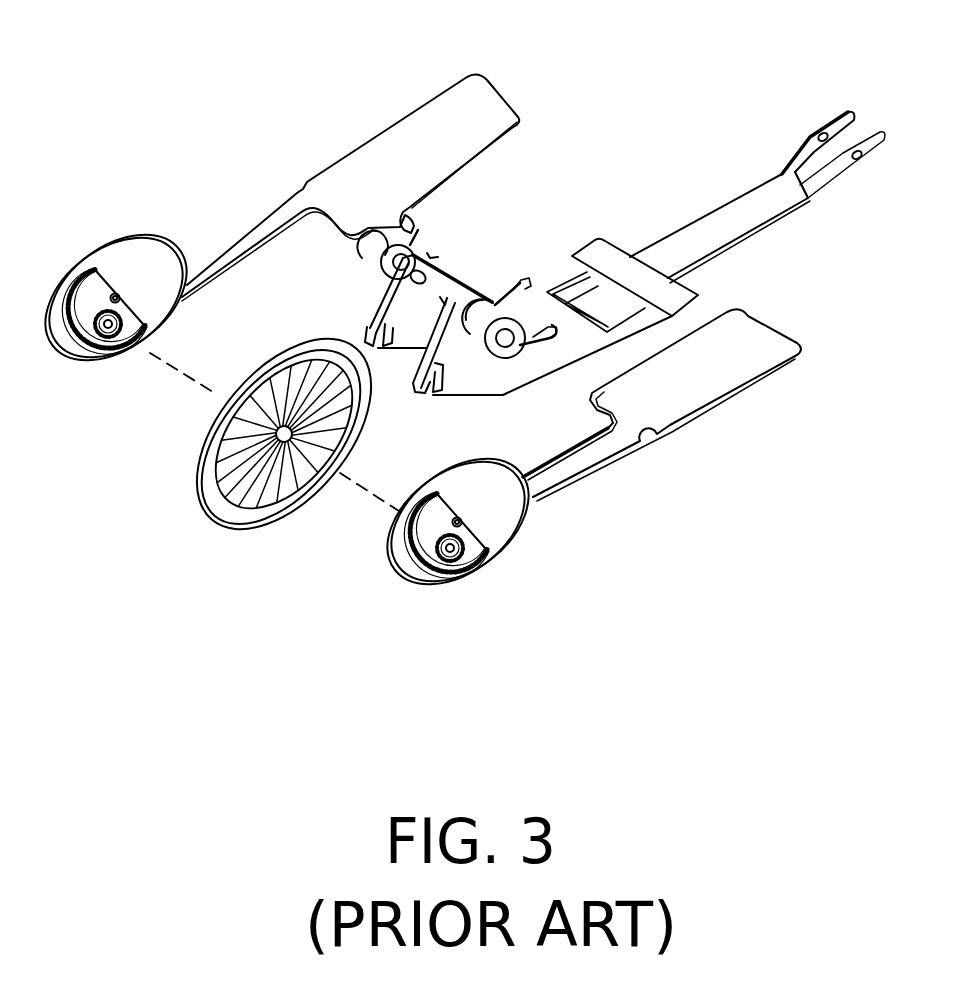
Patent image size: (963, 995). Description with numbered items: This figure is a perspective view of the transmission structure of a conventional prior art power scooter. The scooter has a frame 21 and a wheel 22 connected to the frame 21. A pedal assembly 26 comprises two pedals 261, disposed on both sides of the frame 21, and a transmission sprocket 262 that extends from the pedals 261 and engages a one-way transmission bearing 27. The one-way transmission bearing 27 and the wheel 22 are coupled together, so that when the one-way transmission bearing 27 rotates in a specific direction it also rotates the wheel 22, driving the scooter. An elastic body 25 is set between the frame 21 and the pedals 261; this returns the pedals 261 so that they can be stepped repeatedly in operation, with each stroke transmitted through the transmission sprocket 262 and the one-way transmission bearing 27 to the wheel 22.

The frame 21 is at (735, 217).
The wheel 22 is at (248, 515).
The elastic body 25 is at (499, 308).
The pedal assembly 26 is at (312, 181).
The pedal 261 is at (410, 150).
The transmission sprocket 262 is at (103, 353).
The one-way transmission bearing 27 is at (449, 580).